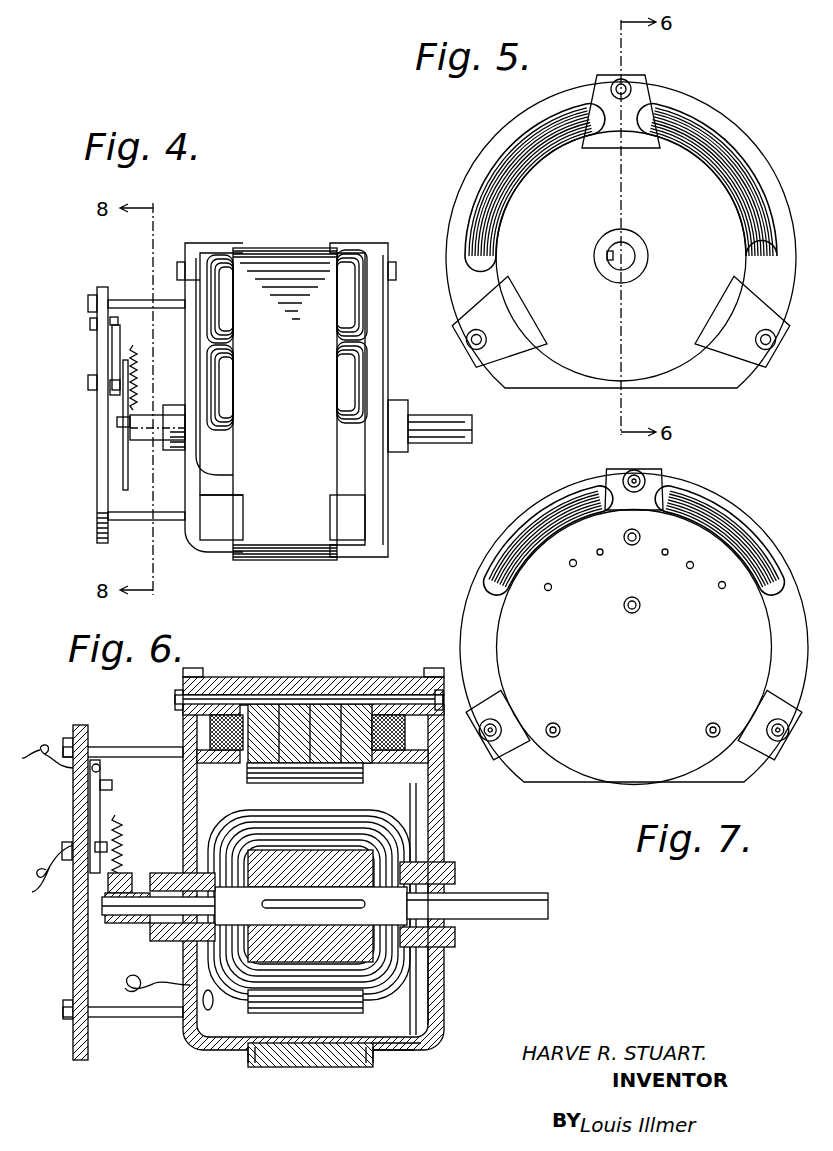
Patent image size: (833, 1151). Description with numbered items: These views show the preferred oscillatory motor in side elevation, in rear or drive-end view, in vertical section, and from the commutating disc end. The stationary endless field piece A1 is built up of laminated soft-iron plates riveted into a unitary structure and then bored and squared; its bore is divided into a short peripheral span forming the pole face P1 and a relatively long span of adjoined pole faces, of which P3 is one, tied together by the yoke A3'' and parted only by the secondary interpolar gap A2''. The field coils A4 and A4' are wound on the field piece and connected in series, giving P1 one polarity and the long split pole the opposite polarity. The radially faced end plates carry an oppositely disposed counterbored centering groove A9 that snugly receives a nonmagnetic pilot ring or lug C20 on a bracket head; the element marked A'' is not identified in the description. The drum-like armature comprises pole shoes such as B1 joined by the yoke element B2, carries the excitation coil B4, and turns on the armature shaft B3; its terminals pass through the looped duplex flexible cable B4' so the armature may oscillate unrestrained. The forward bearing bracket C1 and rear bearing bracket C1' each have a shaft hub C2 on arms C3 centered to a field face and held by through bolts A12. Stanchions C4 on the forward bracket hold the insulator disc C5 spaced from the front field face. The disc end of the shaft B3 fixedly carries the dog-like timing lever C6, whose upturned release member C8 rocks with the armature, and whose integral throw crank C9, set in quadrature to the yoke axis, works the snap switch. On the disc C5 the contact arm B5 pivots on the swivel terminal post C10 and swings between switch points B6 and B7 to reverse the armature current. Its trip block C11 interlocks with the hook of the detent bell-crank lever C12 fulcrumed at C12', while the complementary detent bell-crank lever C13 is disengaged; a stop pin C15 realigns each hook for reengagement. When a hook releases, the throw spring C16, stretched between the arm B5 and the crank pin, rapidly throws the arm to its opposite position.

In FIG. 4, the endless bipolar field piece A1 is at (275, 258).
In FIG. 4, the field coil A4 is at (314, 376).
In FIG. 5, the field coil A4 is at (724, 172).
In FIG. 7, the field coil A4 is at (634, 536).
In FIG. 6, the field coil A4 is at (433, 744).
In FIG. 4, the field coil A4' is at (323, 291).
In FIG. 5, the field coil A4' is at (609, 161).
In FIG. 6, the field coil A4' is at (352, 758).
In FIG. 4, the core laminations A'' is at (271, 571).
In FIG. 6, the core laminations A'' is at (313, 702).
In FIG. 6, the through bolts A12 is at (345, 688).
In FIG. 6, the secondary interpolar gap A2'' is at (259, 1077).
In FIG. 6, the yoke A3'' is at (310, 1083).
In FIG. 6, the counterbored centering groove A9 is at (357, 1032).
In FIG. 6, the short pole face P1 is at (297, 738).
In FIG. 6, the pole face P3 is at (395, 1047).
In FIG. 6, the pole shoe B1 is at (352, 997).
In FIG. 6, the yoke element B2 is at (352, 930).
In FIG. 4, the armature shaft B3 is at (445, 440).
In FIG. 5, the armature shaft B3 is at (627, 253).
In FIG. 6, the armature shaft B3 is at (548, 885).
In FIG. 6, the armature coil B4 is at (353, 905).
In FIG. 6, the duplex flexible cable B4' is at (175, 1048).
In FIG. 4, the contact arm B5 is at (112, 368).
In FIG. 6, the contact arm B5 is at (73, 803).
In FIG. 7, the switch point B6 is at (600, 552).
In FIG. 6, the switch point B6 is at (98, 762).
In FIG. 4, the switch point B7 is at (110, 322).
In FIG. 7, the switch point B7 is at (665, 554).
In FIG. 4, the forward bearing bracket C1 is at (229, 397).
In FIG. 6, the forward bearing bracket C1 is at (313, 906).
In FIG. 4, the rear bearing bracket C1' is at (387, 400).
In FIG. 5, the rear bearing bracket C1' is at (634, 235).
In FIG. 6, the rear bearing bracket C1' is at (470, 949).
In FIG. 4, the shaft hub C2 is at (172, 455).
In FIG. 6, the shaft hub C2 is at (435, 873).
In FIG. 4, the arms C3 is at (186, 280).
In FIG. 5, the arms C3 is at (722, 345).
In FIG. 4, the stanchions C4 is at (128, 300).
In FIG. 7, the stanchions C4 is at (559, 733).
In FIG. 6, the stanchions C4 is at (124, 750).
In FIG. 4, the insulator disc C5 is at (100, 540).
In FIG. 7, the insulator disc C5 is at (578, 782).
In FIG. 6, the insulator disc C5 is at (82, 1060).
In FIG. 6, the timing lever C6 is at (120, 925).
In FIG. 4, the release member C8 is at (122, 475).
In FIG. 4, the throw crank C9 is at (118, 405).
In FIG. 6, the throw crank C9 is at (122, 893).
In FIG. 4, the swivel terminal post C10 is at (118, 380).
In FIG. 7, the swivel terminal post C10 is at (630, 611).
In FIG. 6, the swivel terminal post C10 is at (104, 847).
In FIG. 6, the trip block C11 is at (112, 788).
In FIG. 7, the detent bell-crank lever C12 is at (702, 552).
In FIG. 6, the detent bell-crank lever C12 is at (123, 797).
In FIG. 7, the fulcrum C12' is at (575, 550).
In FIG. 4, the complementary detent bell-crank lever C13 is at (113, 350).
In FIG. 7, the stop pin C15 is at (548, 589).
In FIG. 4, the throw spring C16 is at (140, 385).
In FIG. 6, the throw spring C16 is at (120, 844).
In FIG. 6, the pilot ring C20 is at (240, 1050).